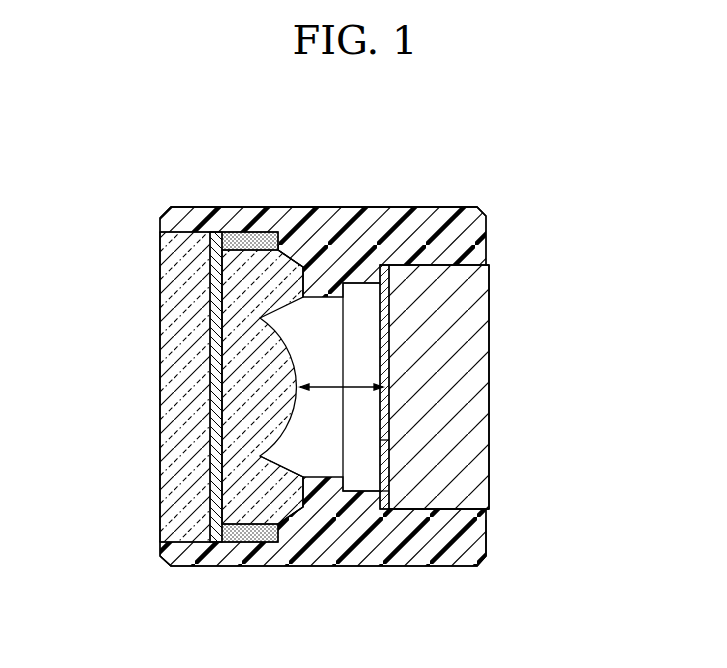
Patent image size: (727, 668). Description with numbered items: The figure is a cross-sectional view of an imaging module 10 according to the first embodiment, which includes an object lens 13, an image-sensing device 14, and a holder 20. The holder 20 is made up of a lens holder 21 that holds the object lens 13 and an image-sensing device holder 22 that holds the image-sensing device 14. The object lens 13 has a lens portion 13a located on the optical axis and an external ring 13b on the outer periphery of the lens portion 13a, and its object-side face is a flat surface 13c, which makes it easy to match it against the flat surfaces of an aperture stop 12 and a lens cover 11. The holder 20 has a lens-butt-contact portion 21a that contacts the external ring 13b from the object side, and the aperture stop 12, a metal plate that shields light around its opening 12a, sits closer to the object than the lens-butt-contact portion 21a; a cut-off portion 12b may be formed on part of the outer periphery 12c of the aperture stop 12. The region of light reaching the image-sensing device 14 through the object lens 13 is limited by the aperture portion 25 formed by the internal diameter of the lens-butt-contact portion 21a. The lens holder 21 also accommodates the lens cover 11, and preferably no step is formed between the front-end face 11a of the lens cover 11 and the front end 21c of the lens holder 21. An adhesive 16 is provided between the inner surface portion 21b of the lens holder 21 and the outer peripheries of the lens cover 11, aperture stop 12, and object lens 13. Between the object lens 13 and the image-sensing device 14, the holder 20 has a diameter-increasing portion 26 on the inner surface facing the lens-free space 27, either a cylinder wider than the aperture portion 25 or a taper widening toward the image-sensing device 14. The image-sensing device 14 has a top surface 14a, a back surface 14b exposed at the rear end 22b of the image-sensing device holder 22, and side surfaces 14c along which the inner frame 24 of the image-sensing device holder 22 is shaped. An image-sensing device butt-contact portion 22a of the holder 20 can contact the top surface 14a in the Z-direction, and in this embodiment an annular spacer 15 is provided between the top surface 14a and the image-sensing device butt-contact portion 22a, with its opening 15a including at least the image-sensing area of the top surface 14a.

The imaging module 10 is at (565, 140).
The lens cover 11 is at (170, 272).
The front-end face 11a is at (160, 330).
The aperture stop 12 is at (212, 262).
The opening 12a is at (212, 383).
The cut-off portion 12b is at (212, 530).
The outer periphery 12c is at (215, 232).
The object lens 13 is at (286, 250).
The lens portion 13a is at (304, 278).
The external ring 13b is at (306, 505).
The flat surface 13c is at (262, 458).
The image-sensing device 14 is at (489, 312).
The top surface 14a is at (385, 510).
The back surface 14b is at (489, 392).
The side surfaces 14c is at (458, 262).
The spacer 15 is at (392, 266).
The opening 15a is at (392, 470).
The adhesive 16 is at (244, 232).
The holder 20 is at (420, 207).
The lens holder 21 is at (198, 556).
The lens-butt-contact portion 21a is at (325, 207).
The inner surface portion 21b is at (162, 558).
The front end 21c is at (160, 214).
The image-sensing device holder 22 is at (458, 556).
The image-sensing device butt-contact portion 22a is at (418, 510).
The rear end 22b is at (486, 548).
The inner frame 24 is at (398, 495).
The aperture portion 25 is at (355, 493).
The diameter-increasing portion 26 is at (390, 270).
The space 27 is at (365, 356).